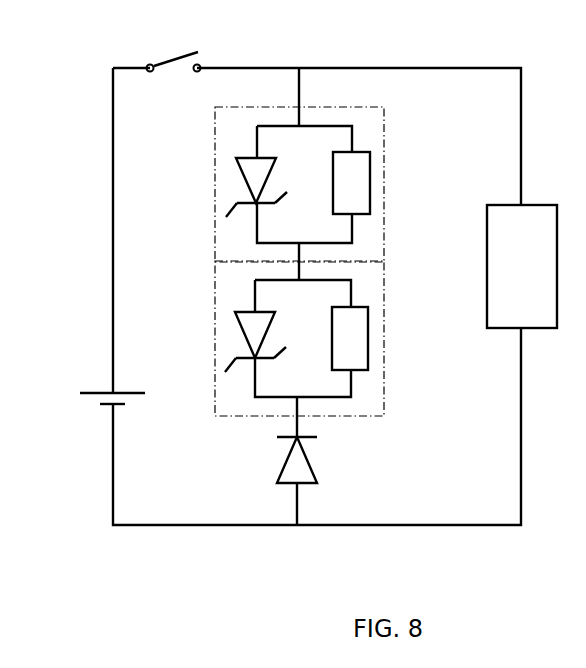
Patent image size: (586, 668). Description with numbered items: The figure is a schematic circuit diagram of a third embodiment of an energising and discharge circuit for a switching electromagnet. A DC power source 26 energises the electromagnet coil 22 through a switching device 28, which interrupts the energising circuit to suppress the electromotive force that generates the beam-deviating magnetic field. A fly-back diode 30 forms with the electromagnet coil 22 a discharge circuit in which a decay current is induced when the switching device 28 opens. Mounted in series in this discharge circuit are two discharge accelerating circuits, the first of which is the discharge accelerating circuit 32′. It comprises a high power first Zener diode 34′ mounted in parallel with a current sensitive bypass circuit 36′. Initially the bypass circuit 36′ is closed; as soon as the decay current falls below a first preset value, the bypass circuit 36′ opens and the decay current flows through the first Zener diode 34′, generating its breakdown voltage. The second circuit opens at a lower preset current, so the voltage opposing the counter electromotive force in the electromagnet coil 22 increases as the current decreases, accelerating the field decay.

The electromagnet coil 22 is at (522, 266).
The DC power source 26 is at (88, 392).
The switching device 28 is at (180, 62).
The fly-back diode 30 is at (293, 461).
The first discharge accelerating circuit 32′ is at (297, 184).
The first Zener diode 34′ is at (240, 166).
The first current sensitive bypass circuit 36′ is at (360, 175).